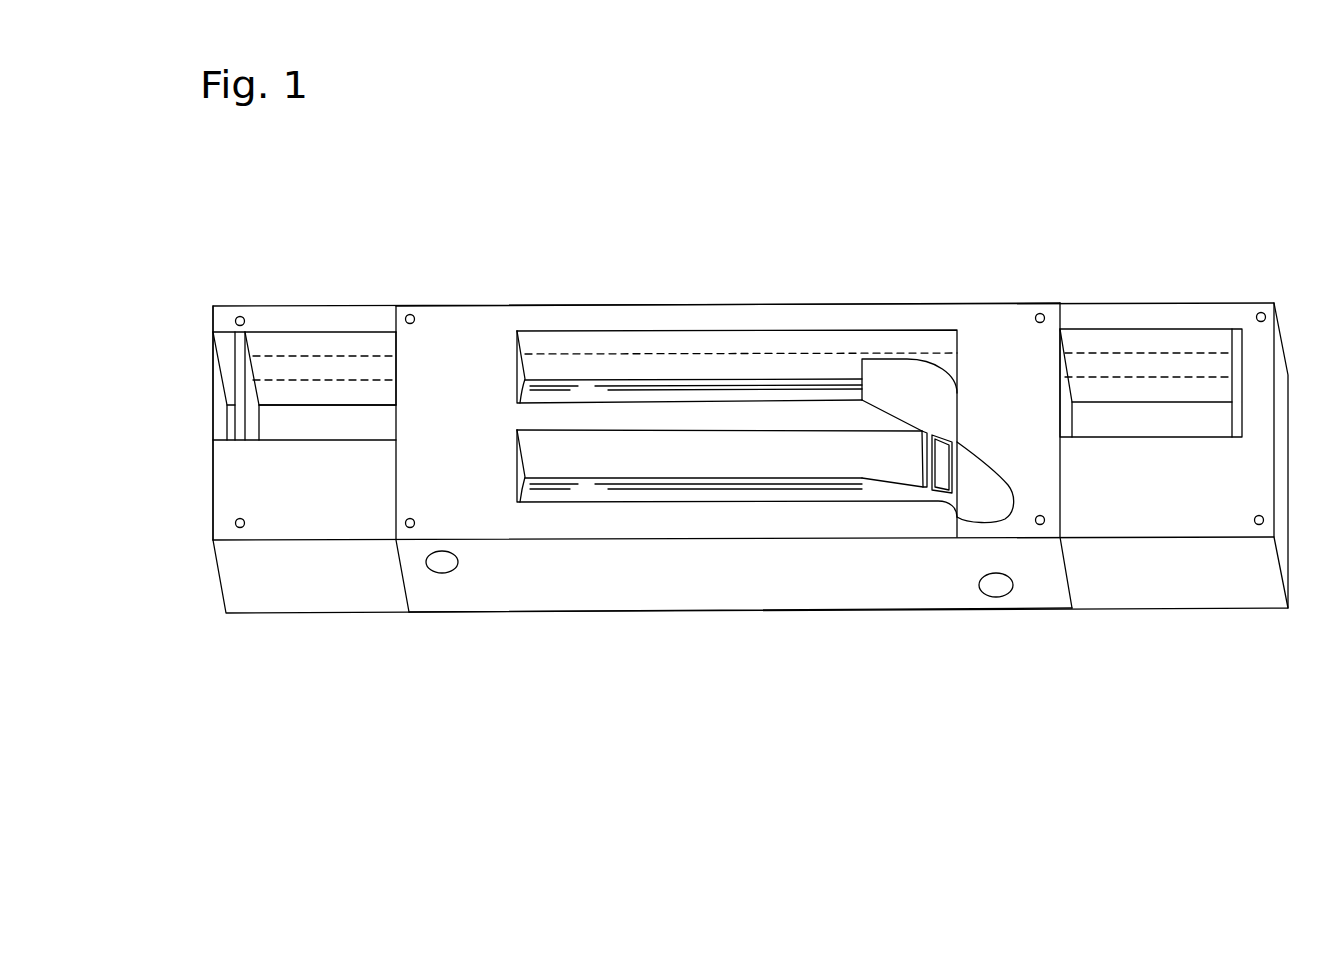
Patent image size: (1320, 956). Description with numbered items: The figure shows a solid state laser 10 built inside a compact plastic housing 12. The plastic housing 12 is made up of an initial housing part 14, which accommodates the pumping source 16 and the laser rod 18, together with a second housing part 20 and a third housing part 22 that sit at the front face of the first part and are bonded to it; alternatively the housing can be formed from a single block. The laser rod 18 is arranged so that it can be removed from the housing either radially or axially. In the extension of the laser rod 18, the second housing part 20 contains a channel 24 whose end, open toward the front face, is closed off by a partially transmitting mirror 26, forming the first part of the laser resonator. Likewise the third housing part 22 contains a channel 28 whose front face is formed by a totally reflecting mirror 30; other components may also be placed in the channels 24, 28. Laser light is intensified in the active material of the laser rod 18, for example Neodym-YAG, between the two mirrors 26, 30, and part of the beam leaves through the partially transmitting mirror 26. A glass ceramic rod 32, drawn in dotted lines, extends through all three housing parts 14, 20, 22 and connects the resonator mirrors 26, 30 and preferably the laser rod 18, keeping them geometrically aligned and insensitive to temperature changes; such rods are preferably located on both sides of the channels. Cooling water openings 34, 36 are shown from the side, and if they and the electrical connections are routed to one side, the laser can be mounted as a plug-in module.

The solid state laser 10 is at (871, 616).
The plastic housing 12 is at (797, 317).
The initial housing part 14 is at (568, 580).
The pumping source 16 is at (676, 490).
The laser rod 18 is at (707, 392).
The second housing part 20 is at (330, 572).
The third housing part 22 is at (1140, 568).
The channel 24 is at (290, 393).
The partially transmitting mirror 26 is at (241, 353).
The channel 28 is at (1156, 412).
The totally reflecting mirror 30 is at (1232, 345).
The glass ceramic rod 32 is at (335, 367).
The cooling water opening 34 is at (442, 562).
The cooling water opening 36 is at (997, 587).